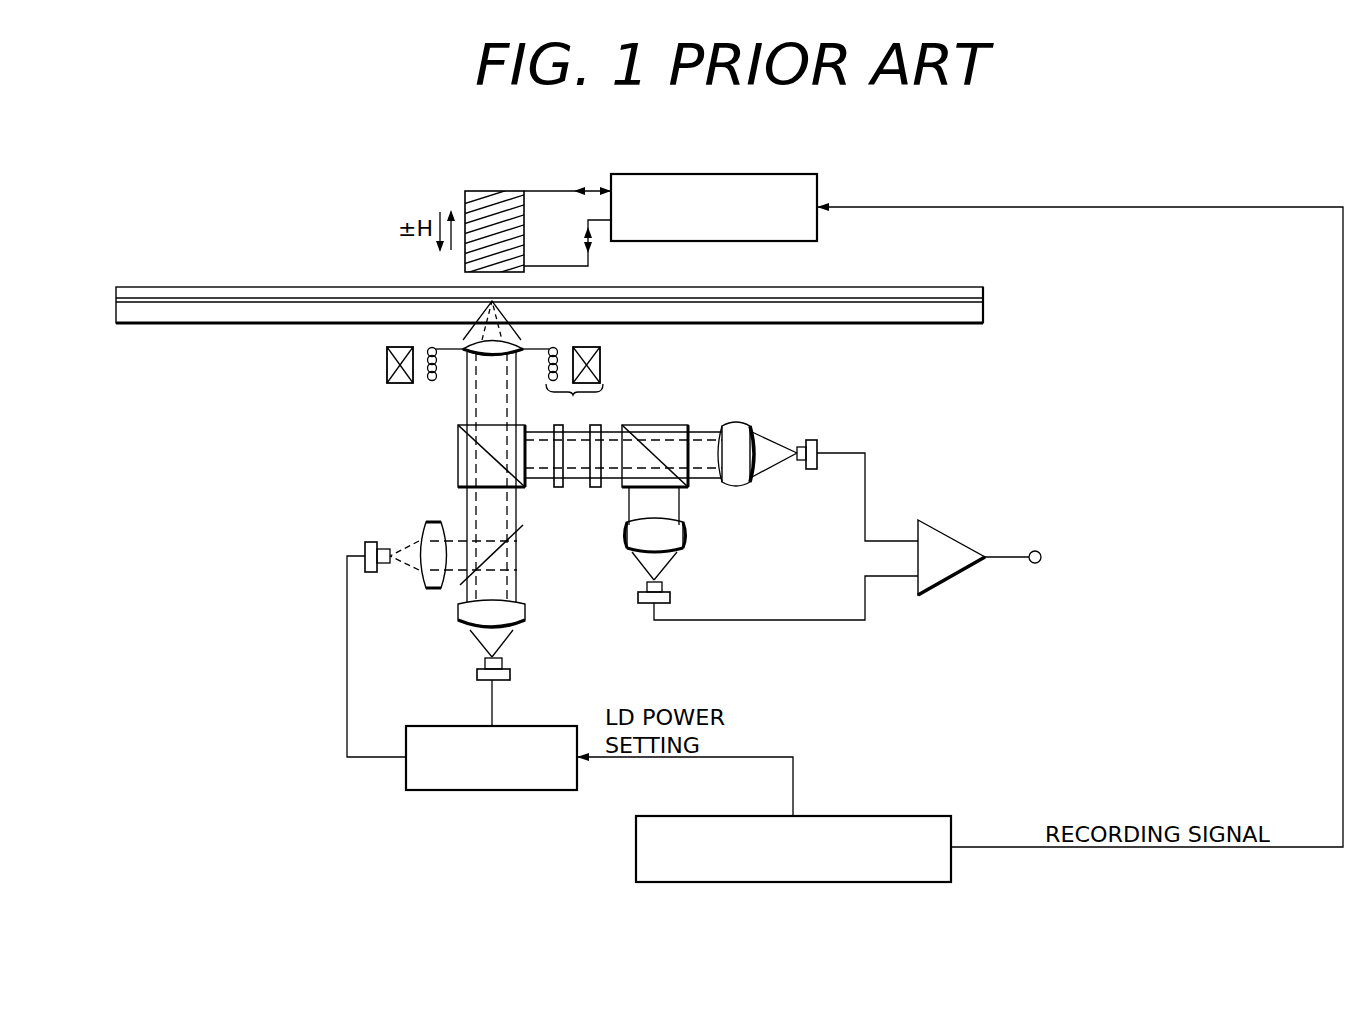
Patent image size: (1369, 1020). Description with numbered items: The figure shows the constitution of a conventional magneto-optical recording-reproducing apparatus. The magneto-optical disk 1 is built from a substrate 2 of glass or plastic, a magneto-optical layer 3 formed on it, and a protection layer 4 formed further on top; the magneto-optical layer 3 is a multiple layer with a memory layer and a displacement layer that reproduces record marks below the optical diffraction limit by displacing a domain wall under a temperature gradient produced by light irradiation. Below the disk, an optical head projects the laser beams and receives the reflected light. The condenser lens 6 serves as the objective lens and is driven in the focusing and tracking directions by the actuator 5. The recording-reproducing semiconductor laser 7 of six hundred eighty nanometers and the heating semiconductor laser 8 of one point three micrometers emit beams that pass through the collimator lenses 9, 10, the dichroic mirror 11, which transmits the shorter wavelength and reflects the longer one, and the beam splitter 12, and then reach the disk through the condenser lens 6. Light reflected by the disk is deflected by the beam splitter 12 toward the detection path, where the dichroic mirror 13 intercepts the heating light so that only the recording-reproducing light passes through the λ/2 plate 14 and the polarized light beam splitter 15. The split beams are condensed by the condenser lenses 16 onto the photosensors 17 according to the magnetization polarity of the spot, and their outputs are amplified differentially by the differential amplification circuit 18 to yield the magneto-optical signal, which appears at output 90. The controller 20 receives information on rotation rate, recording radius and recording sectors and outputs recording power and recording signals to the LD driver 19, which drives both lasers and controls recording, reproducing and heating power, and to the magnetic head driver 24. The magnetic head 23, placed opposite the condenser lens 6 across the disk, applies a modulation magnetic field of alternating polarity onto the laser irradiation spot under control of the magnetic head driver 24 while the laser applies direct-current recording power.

The magneto-optical disk 1 is at (575, 303).
The substrate 2 is at (983, 318).
The magneto-optical layer 3 is at (983, 300).
The protection layer 4 is at (983, 290).
The actuator 5 is at (495, 386).
The condenser lens 6 is at (523, 347).
The semiconductor laser 7 is at (477, 674).
The semiconductor laser 8 is at (372, 542).
The collimator lens 9 is at (458, 612).
The collimator lens 10 is at (428, 522).
The dichroic mirror 11 is at (488, 560).
The beam splitter 12 is at (458, 444).
The dichroic mirror 13 is at (556, 490).
The λ/2 plate 14 is at (597, 425).
The polarized light beam splitter 15 is at (680, 425).
The condenser lens 16 is at (735, 420).
The photosensor 17 is at (811, 440).
The differential amplification circuit 18 is at (960, 540).
The LD driver 19 is at (568, 726).
The controller 20 is at (908, 816).
The magnetic head 23 is at (490, 192).
The magnetic head driver 24 is at (799, 174).
The output terminal 90 is at (1040, 550).